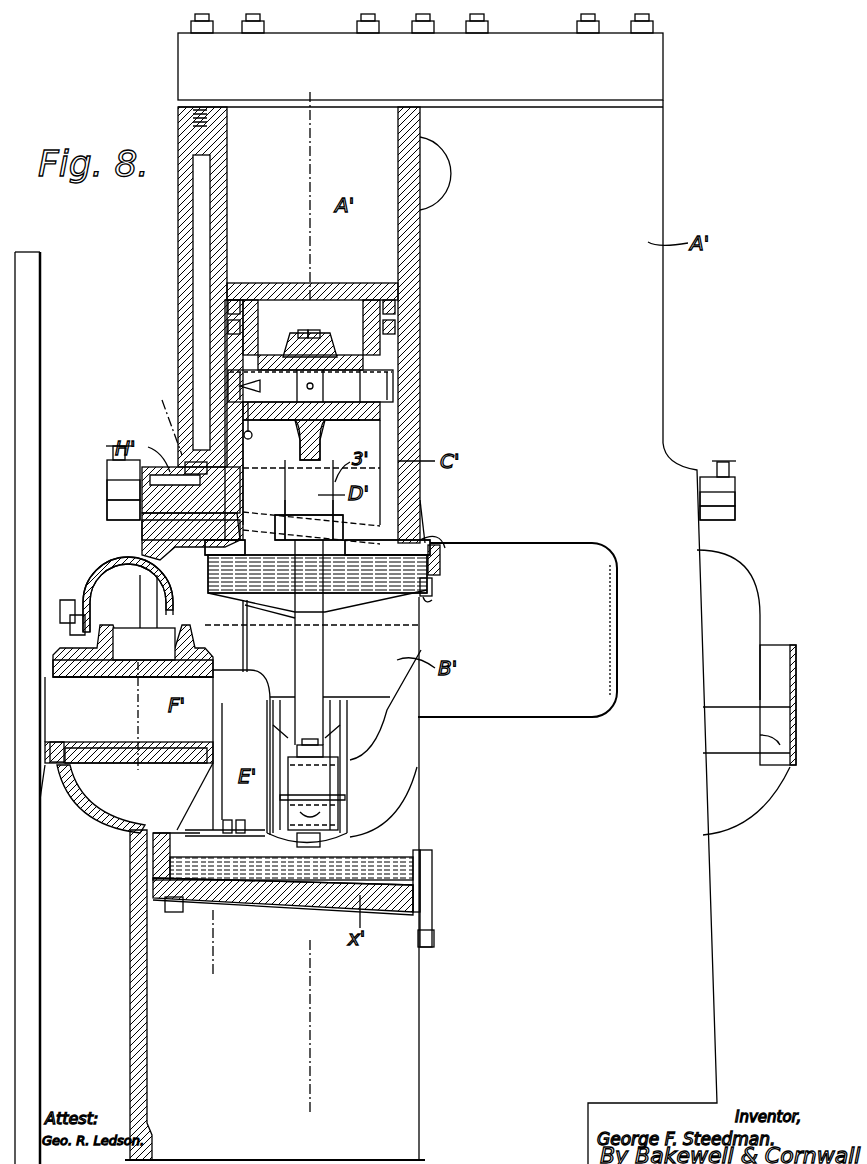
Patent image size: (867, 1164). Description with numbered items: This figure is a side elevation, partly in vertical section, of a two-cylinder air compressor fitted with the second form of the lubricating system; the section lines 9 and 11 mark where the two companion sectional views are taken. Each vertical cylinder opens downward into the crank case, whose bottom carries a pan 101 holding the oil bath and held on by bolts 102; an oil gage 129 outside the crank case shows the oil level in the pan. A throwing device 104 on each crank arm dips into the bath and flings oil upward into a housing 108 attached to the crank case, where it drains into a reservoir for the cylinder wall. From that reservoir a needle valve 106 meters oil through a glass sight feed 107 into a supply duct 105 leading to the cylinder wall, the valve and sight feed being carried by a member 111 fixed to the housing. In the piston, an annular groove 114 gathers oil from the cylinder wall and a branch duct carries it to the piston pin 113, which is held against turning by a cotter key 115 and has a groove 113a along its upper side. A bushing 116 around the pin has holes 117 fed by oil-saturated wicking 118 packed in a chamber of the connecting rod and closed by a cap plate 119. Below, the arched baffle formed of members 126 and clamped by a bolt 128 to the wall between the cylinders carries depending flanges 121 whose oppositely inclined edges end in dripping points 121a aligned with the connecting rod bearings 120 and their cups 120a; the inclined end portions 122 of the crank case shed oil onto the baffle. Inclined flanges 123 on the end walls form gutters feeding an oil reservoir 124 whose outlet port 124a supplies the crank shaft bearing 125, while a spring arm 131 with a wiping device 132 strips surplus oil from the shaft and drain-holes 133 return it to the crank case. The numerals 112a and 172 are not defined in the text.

The section line 9— 9 is at (322, 87).
The section line 11— 11 is at (166, 404).
The pan 101 is at (275, 900).
The bolts 102 is at (173, 914).
The throwing device 104 is at (138, 852).
The supply duct 105 is at (170, 543).
The needle valve 106 is at (108, 462).
The glass sight feed 107 is at (106, 492).
The housing 108 is at (190, 468).
The member 111 is at (106, 514).
The valve chamber wall 112a is at (236, 352).
The piston pin 113 is at (385, 385).
The groove 113a is at (400, 373).
The annular groove 114 is at (403, 352).
The cotter key 115 is at (250, 440).
The bushing 116 is at (335, 352).
The holes 117 is at (316, 415).
The wicking 118 is at (303, 330).
The cap plate 119 is at (316, 330).
The connecting rod bearing 120 is at (340, 783).
The reservoir or cup 120a is at (340, 818).
The depending flange 121 is at (330, 595).
The dripping point 121a is at (310, 612).
The end portions of the crank case 122 is at (215, 540).
The flange or gutter 123 is at (168, 555).
The oil reservoir 124 is at (125, 650).
The outlet port 124a is at (133, 684).
The crank shaft bearing 125 is at (122, 763).
The baffle member 126 is at (434, 548).
The bolt 128 is at (435, 565).
The oil gage 129 is at (432, 897).
The spring arm 131 is at (46, 790).
The wiping device 132 is at (58, 742).
The drain-holes 133 is at (80, 800).
The sleeve flange 172 is at (280, 508).